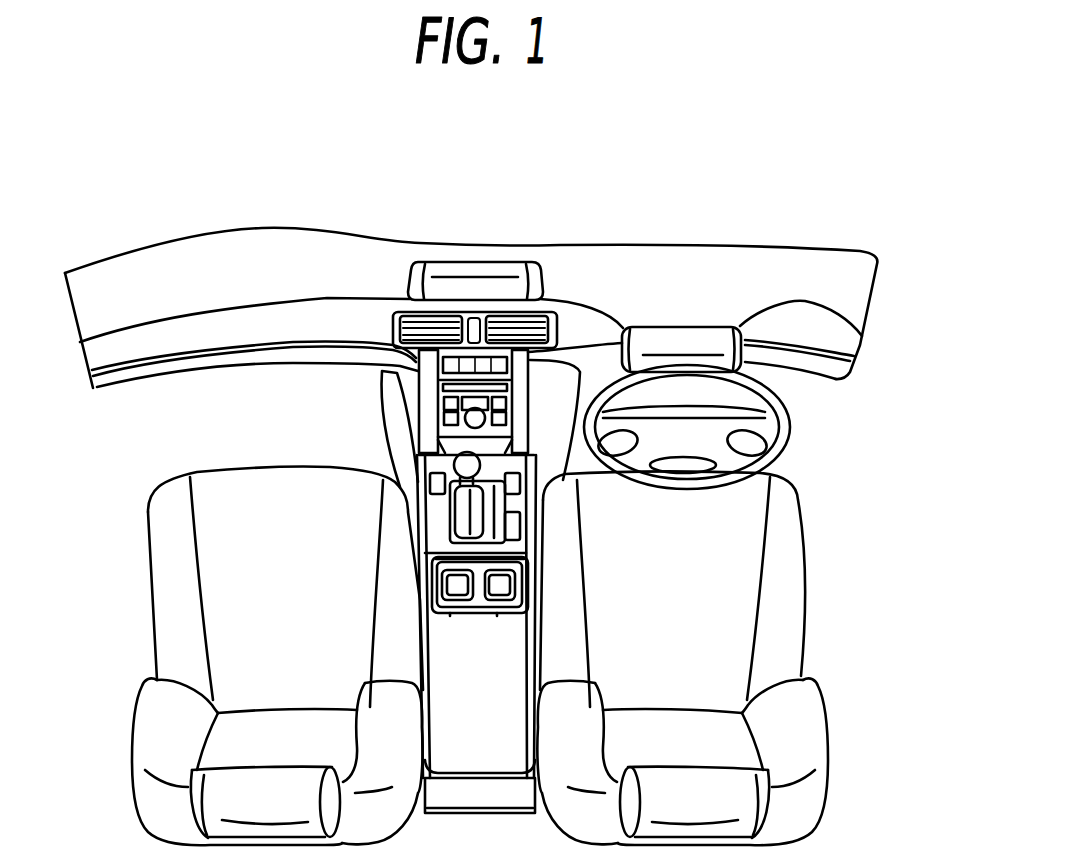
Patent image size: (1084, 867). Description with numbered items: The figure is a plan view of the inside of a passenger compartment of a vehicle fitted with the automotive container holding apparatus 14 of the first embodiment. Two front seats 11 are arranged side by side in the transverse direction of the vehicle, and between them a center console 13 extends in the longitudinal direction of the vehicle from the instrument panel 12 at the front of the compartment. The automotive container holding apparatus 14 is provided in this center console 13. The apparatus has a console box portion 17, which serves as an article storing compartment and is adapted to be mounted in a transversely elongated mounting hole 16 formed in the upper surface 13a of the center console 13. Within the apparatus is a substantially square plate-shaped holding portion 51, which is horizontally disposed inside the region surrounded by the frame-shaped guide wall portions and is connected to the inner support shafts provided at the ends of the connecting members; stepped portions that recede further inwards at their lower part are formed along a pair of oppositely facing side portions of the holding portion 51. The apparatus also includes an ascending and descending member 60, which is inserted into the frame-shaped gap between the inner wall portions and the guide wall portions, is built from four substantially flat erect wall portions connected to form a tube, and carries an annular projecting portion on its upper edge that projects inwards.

The front seats 11 is at (138, 621).
The instrument panel 12 is at (614, 262).
The center console 13 is at (400, 434).
The upper surface 13a is at (440, 522).
The automotive container holding apparatus 14 is at (545, 584).
The mounting hole 16 is at (540, 563).
The console box portion 17 is at (443, 578).
The holding portion 51 is at (447, 594).
The ascending and descending member 60 is at (450, 613).